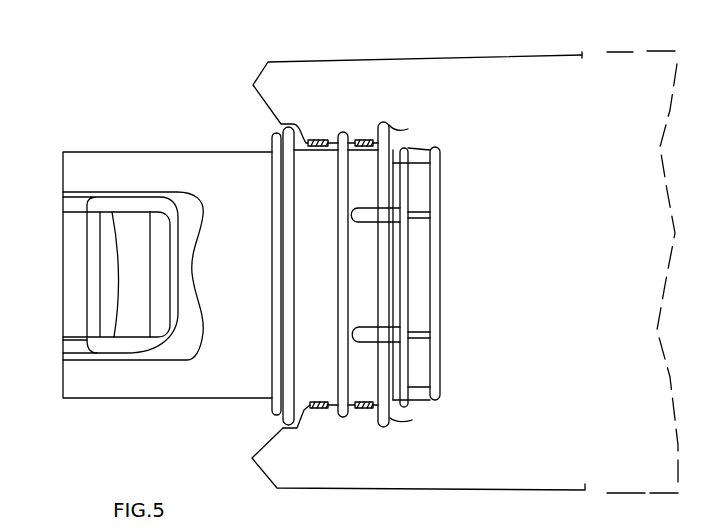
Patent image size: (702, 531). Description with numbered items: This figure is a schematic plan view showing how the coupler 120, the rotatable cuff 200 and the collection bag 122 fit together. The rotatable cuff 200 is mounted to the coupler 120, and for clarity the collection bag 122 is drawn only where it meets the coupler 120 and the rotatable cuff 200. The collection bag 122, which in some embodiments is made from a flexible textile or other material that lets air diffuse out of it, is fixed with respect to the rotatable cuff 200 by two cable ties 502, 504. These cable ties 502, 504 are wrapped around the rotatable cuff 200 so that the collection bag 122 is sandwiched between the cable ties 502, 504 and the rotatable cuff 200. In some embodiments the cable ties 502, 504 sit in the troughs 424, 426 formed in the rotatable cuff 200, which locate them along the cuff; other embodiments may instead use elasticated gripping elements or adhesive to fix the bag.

The coupler 120 is at (98, 150).
The collection bag 122 is at (415, 62).
The rotatable cuff 200 is at (334, 271).
The trough 424 is at (317, 181).
The trough 426 is at (360, 172).
The cable tie 502 is at (318, 410).
The cable tie 504 is at (362, 410).